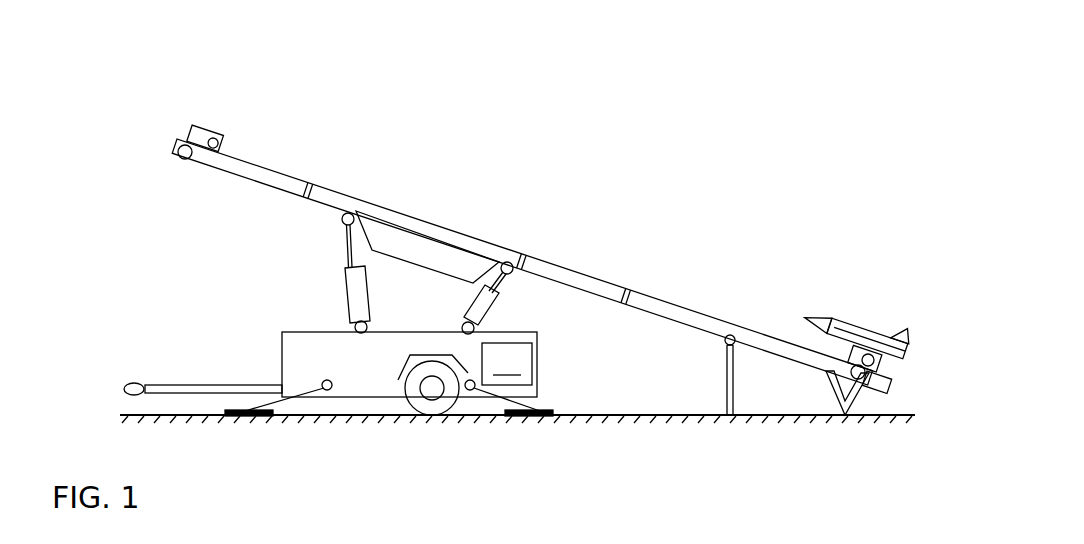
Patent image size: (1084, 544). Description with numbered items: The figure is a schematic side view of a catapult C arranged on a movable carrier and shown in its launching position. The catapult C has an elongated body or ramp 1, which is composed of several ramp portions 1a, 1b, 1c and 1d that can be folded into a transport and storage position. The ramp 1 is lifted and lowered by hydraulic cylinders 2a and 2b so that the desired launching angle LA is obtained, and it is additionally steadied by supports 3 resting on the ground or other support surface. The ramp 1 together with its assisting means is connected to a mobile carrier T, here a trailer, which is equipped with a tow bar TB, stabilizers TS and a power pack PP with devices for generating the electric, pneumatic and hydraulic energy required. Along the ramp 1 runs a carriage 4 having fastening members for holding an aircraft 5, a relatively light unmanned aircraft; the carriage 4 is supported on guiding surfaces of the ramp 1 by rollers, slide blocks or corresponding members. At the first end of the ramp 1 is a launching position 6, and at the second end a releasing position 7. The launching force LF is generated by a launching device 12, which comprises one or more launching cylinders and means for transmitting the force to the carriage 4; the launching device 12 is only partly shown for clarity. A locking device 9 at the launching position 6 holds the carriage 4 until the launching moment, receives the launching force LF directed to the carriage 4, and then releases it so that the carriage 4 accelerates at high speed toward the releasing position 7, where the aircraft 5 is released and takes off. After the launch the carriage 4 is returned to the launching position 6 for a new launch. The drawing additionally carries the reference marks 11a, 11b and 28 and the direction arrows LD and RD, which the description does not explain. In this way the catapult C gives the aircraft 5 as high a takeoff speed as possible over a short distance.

The ramp 1 is at (432, 176).
The ramp portion 1a is at (283, 178).
The ramp portion 1b is at (383, 212).
The ramp portion 1c is at (598, 283).
The ramp portion 1d is at (757, 338).
The hydraulic cylinder 2a is at (348, 285).
The hydraulic cylinder 2b is at (476, 302).
The support 3 is at (725, 380).
The carriage 4 is at (196, 128).
The aircraft 5 is at (847, 318).
The launching position 6 is at (810, 271).
The releasing position 7 is at (262, 93).
The locking device 9 is at (884, 386).
The front deflection roller 11a is at (184, 160).
The rear deflection roller 11b is at (862, 388).
The launching device 12 is at (422, 250).
The roller 28 is at (876, 362).
The catapult C is at (755, 124).
The launch direction LD is at (575, 147).
The return direction RD is at (651, 169).
The launching angle LA is at (664, 348).
The launching force LF is at (937, 260).
The mobile carrier T is at (300, 332).
The tow bar TB is at (172, 385).
The stabilizers TS is at (290, 400).
The power pack PP is at (507, 364).